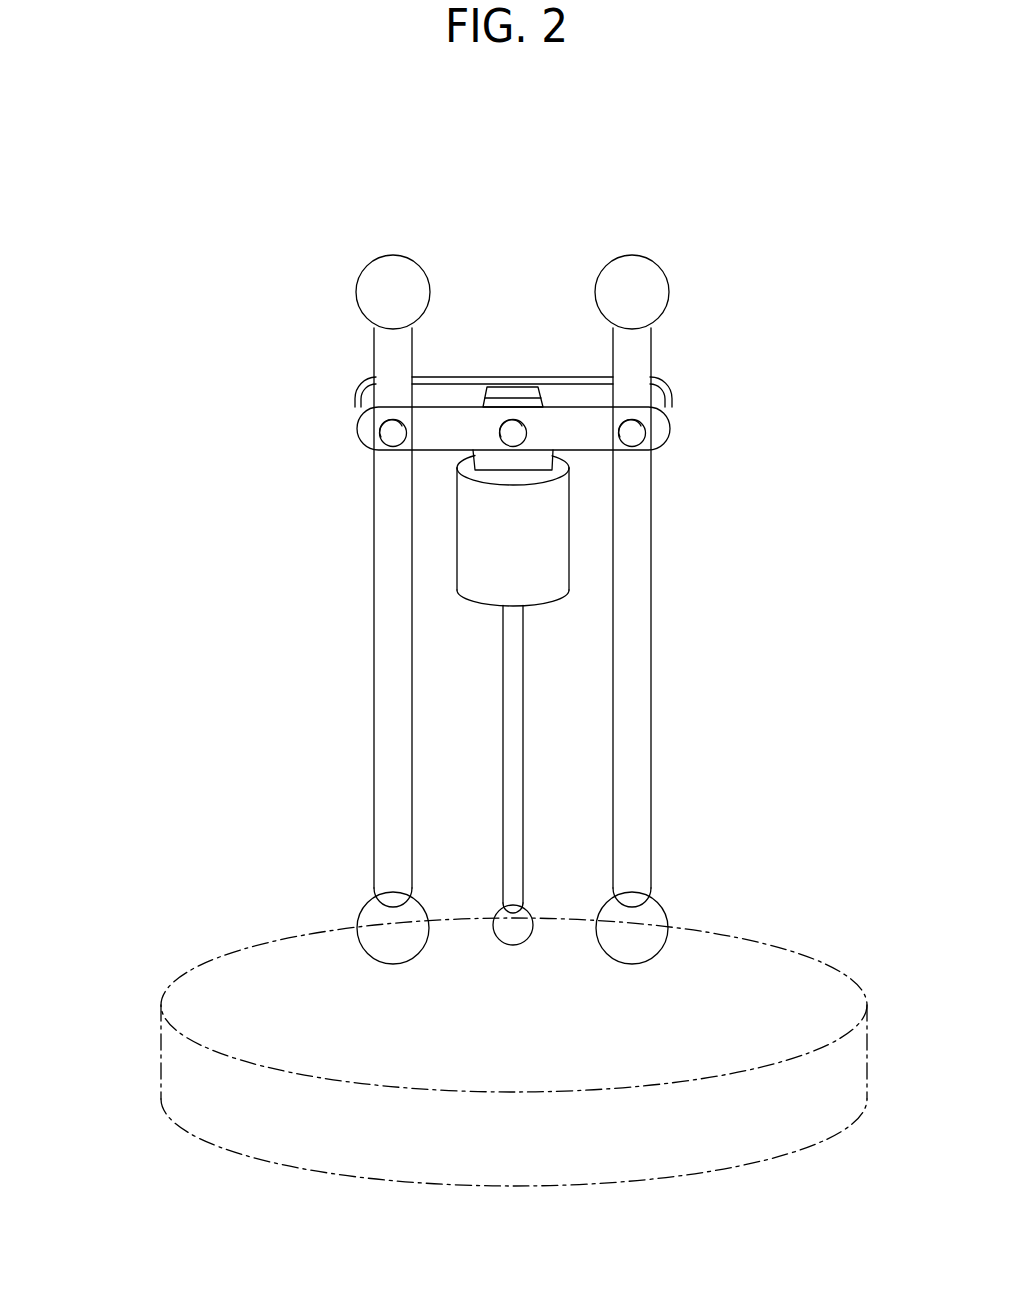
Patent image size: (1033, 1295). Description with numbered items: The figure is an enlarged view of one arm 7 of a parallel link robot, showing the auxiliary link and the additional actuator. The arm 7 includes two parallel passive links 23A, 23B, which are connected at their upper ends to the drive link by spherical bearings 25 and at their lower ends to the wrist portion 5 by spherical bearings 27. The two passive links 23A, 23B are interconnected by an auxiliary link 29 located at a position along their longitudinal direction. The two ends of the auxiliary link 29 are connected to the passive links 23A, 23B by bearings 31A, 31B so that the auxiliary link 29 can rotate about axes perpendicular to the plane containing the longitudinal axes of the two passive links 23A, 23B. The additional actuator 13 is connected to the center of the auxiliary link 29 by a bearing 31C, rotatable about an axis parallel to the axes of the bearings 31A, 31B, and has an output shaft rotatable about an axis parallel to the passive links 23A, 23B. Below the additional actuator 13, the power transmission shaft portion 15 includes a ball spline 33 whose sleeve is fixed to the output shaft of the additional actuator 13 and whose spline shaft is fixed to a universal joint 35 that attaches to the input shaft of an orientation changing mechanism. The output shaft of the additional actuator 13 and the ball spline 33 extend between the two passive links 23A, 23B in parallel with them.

The wrist portion 5 is at (162, 1045).
The arm 7 is at (790, 192).
The additional actuator 13 is at (457, 527).
The power transmission shaft portion 15 is at (490, 724).
The passive link 23A is at (374, 667).
The passive link 23B is at (652, 597).
The spherical bearing 25 is at (390, 282).
The spherical bearing 27 is at (360, 913).
The auxiliary link 29 is at (442, 430).
The bearing 31A is at (390, 435).
The bearing 31B is at (634, 435).
The bearing 31C is at (513, 430).
The ball spline 33 is at (523, 792).
The universal joint 35 is at (497, 913).